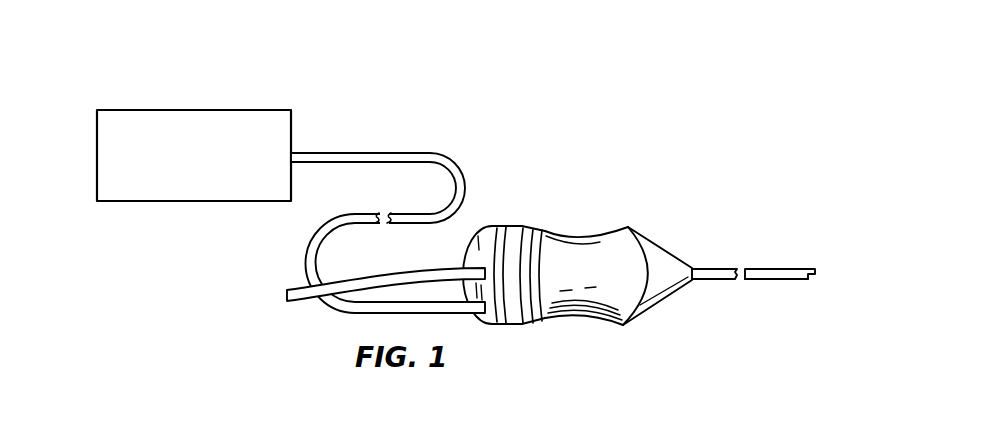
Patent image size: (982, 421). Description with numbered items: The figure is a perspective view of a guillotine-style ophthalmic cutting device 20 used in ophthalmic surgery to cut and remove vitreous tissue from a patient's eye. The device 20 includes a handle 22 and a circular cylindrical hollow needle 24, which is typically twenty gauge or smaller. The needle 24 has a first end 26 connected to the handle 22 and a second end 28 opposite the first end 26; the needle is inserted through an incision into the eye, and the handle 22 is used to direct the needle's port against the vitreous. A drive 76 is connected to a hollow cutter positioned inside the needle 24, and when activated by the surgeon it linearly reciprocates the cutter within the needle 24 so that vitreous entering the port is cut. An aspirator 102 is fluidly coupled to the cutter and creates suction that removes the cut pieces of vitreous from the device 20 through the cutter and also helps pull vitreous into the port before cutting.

The guillotine-style ophthalmic cutting device 20 is at (592, 70).
The handle 22 is at (567, 257).
The needle 24 is at (757, 272).
The first end 26 is at (713, 281).
The second end 28 is at (798, 280).
The drive 76 is at (194, 155).
The aspirator 102 is at (86, 295).